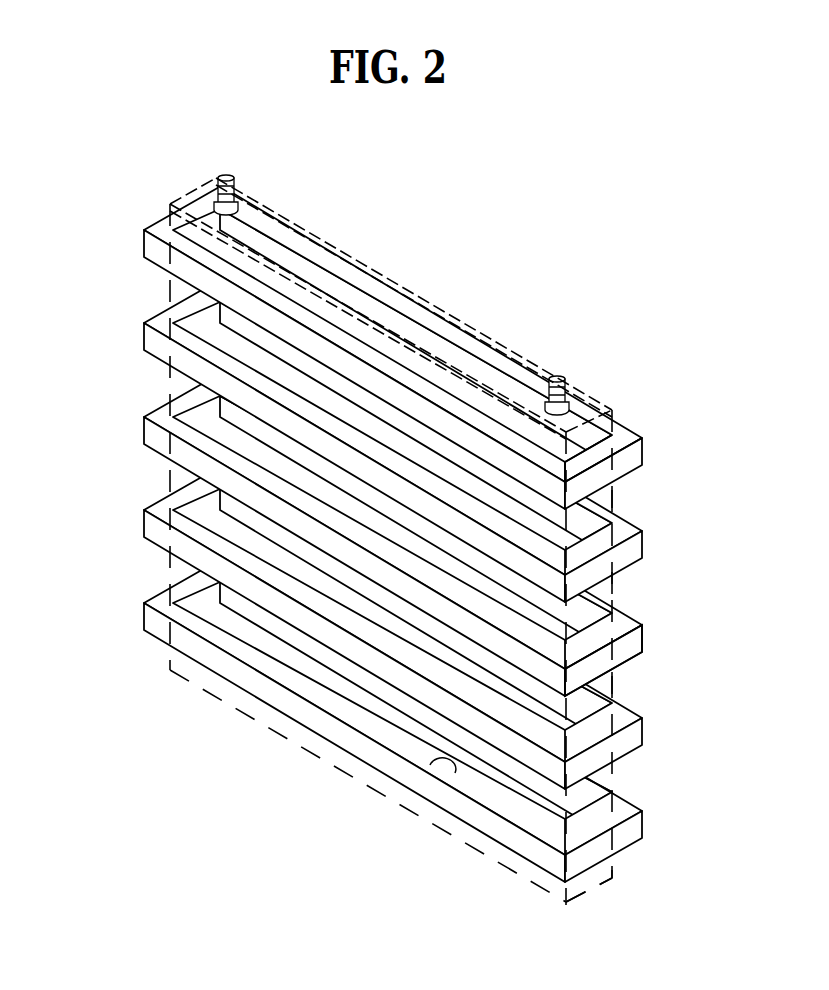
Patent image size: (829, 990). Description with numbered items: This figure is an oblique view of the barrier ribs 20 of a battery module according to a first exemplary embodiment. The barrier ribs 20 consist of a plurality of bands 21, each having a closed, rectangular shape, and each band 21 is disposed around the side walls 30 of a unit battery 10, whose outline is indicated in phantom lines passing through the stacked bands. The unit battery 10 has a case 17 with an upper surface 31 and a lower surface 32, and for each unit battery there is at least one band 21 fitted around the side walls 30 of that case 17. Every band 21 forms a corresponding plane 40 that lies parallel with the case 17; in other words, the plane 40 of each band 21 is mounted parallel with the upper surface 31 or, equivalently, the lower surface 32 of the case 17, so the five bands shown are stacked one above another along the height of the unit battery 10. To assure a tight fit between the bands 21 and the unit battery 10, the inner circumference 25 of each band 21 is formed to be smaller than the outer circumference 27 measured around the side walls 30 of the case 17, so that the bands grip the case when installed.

The unit battery 10 is at (349, 264).
The case 17 is at (606, 502).
The barrier ribs 20 is at (651, 644).
The band 21 is at (143, 253).
The inner circumference 25 is at (430, 765).
The outer circumference 27 is at (610, 582).
The side walls 30 is at (610, 682).
The upper surface 31 is at (591, 399).
The lower surface 32 is at (609, 877).
The plane 40 is at (623, 432).